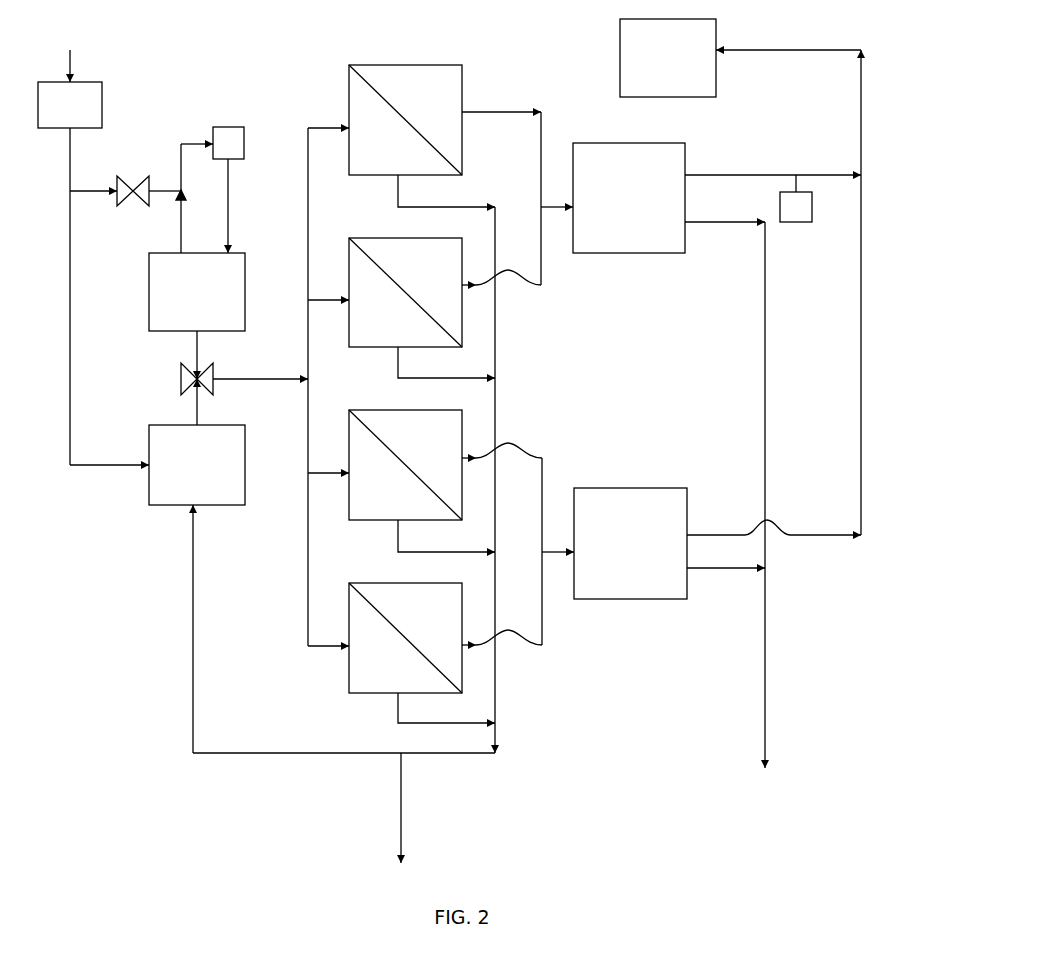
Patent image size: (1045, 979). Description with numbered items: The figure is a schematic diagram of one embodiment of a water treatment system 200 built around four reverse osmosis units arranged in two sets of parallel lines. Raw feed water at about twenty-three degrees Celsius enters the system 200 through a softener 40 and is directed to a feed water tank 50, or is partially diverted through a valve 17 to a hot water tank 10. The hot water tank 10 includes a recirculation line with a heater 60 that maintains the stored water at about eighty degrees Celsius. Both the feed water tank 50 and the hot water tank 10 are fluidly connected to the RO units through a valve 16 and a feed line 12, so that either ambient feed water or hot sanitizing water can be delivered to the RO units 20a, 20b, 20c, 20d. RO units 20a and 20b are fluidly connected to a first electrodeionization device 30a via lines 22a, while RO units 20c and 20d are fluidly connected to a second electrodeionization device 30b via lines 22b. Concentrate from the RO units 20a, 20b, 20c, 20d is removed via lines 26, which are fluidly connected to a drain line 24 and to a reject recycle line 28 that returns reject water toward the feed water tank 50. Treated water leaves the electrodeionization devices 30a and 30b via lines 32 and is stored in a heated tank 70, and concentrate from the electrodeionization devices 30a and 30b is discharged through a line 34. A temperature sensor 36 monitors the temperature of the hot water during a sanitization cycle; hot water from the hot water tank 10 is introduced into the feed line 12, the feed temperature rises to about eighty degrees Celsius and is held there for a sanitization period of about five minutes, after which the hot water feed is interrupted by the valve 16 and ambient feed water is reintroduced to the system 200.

The water treatment system 200 is at (608, 817).
The softener 40 is at (70, 89).
The valve 17 is at (122, 178).
The heater 60 is at (220, 127).
The hot water tank 10 is at (197, 292).
The valve 16 is at (181, 385).
The feed line 12 is at (273, 380).
The feed water tank 50 is at (197, 465).
The RO unit 20a is at (405, 120).
The RO unit 20b is at (405, 292).
The RO unit 20c is at (405, 465).
The RO unit 20d is at (405, 638).
The lines 22a is at (558, 208).
The lines 22b is at (555, 551).
The lines 26 is at (497, 703).
The electrodeionization device 30a is at (629, 198).
The electrodeionization device 30b is at (630, 543).
The heated tank 70 is at (668, 58).
The lines 32 is at (861, 110).
The temperature sensor 36 is at (796, 222).
The line 34 is at (765, 707).
The reject recycle line 28 is at (238, 757).
The drain line 24 is at (401, 827).